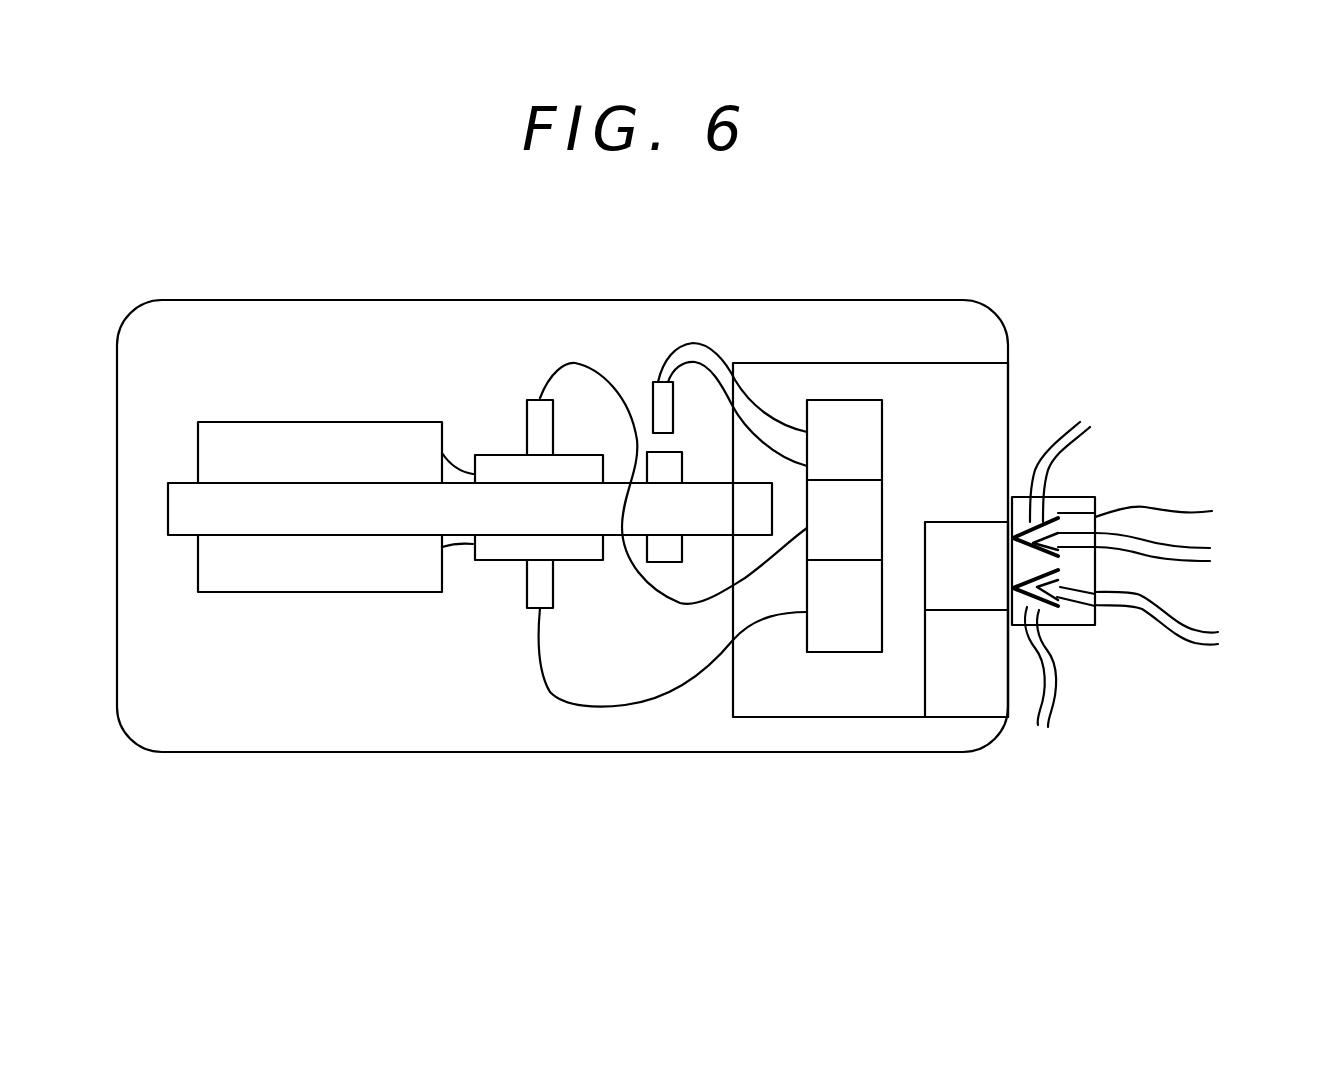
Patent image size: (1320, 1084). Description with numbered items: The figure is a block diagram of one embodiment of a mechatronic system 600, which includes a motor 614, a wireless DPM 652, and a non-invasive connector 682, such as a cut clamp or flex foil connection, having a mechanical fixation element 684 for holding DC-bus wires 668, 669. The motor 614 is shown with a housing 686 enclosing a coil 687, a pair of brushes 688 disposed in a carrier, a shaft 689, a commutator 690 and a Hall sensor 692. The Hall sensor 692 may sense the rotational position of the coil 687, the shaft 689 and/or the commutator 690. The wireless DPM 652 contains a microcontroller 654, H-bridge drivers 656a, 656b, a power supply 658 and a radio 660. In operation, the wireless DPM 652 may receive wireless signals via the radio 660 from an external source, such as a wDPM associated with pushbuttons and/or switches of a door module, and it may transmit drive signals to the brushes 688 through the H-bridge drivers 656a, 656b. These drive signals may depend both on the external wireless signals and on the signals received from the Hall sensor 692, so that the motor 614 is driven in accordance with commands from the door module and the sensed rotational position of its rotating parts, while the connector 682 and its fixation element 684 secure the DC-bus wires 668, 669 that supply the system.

The mechatronic system 600 is at (1067, 203).
The motor 614 is at (297, 812).
The wDPM 652 is at (925, 363).
The microcontroller 654 is at (872, 463).
The H-bridge driver 656a is at (844, 520).
The H-bridge driver 656b is at (844, 606).
The power supply 658 is at (994, 589).
The radio 660 is at (996, 680).
The DC-bus wire 668 is at (1057, 690).
The DC-bus wire 669 is at (1065, 440).
The non-invasive connector 682 is at (1062, 503).
The mechanical fixation element 684 is at (1198, 565).
The housing 686 is at (275, 300).
The coil 687 is at (327, 592).
The brushes 688 is at (527, 418).
The shaft 689 is at (195, 510).
The commutator 690 is at (507, 560).
The Hall sensor 692 is at (650, 402).